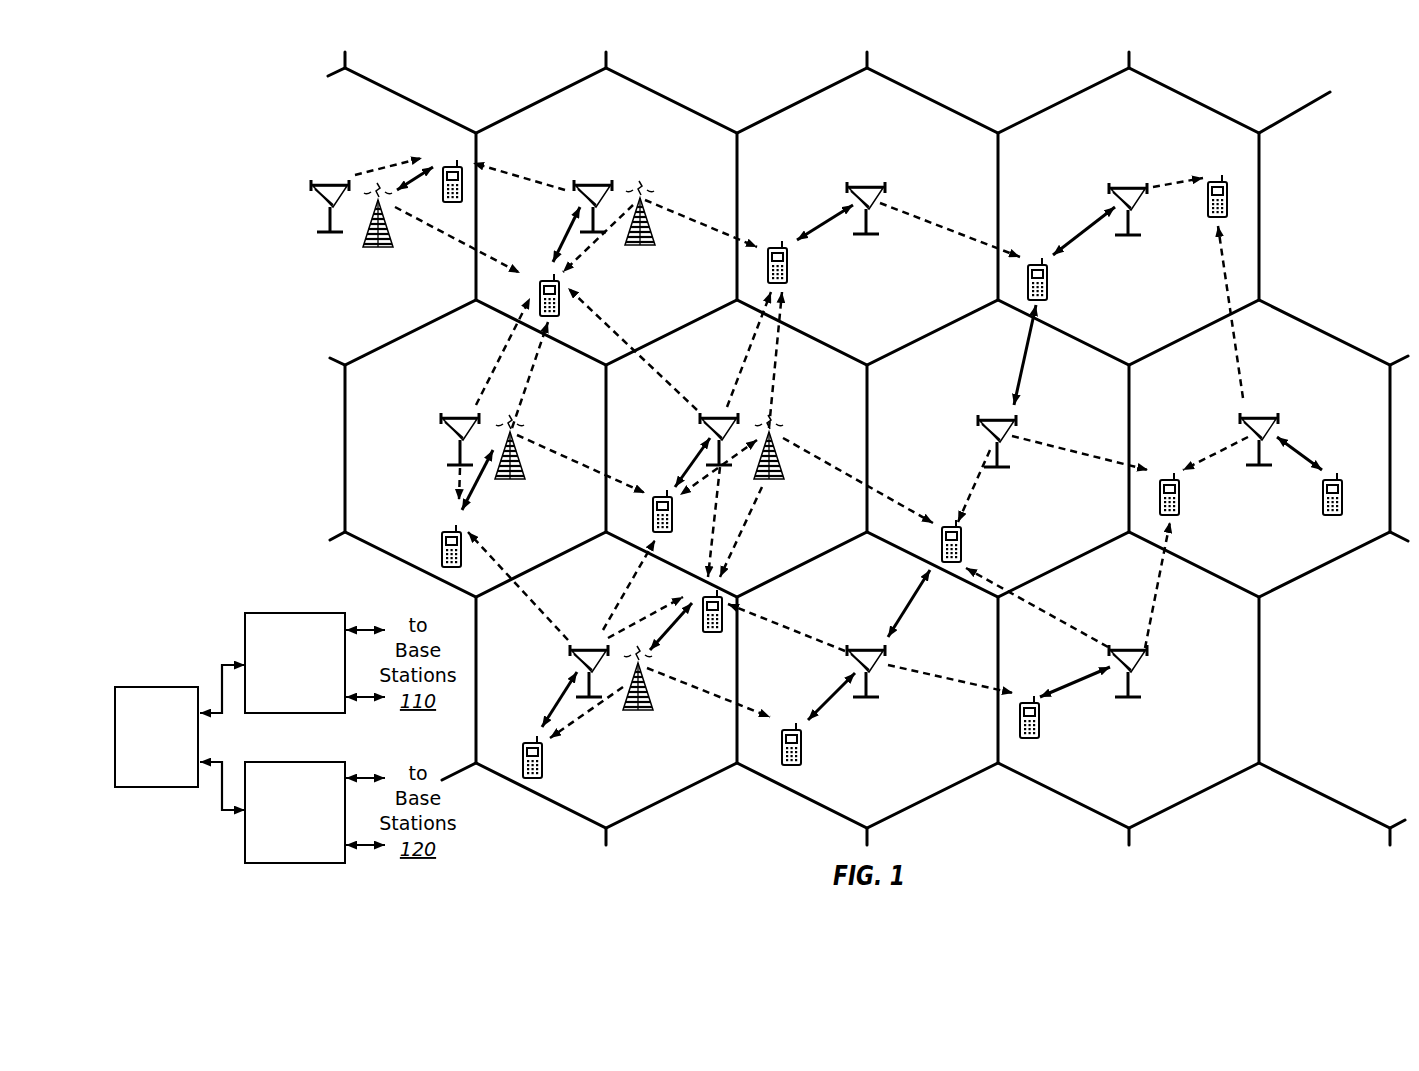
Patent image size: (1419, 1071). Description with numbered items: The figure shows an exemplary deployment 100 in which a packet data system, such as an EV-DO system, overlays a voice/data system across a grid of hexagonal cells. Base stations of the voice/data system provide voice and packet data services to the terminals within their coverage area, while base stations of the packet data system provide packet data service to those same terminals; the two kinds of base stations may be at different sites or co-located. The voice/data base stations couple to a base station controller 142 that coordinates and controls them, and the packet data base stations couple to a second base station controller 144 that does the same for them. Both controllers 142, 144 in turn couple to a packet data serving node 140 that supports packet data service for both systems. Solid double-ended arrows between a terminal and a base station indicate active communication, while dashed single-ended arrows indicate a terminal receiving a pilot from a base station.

The deployment 100 is at (1363, 63).
The packet data serving node 140 is at (150, 686).
The base station controller 142 is at (290, 612).
The base station controller 144 is at (290, 761).